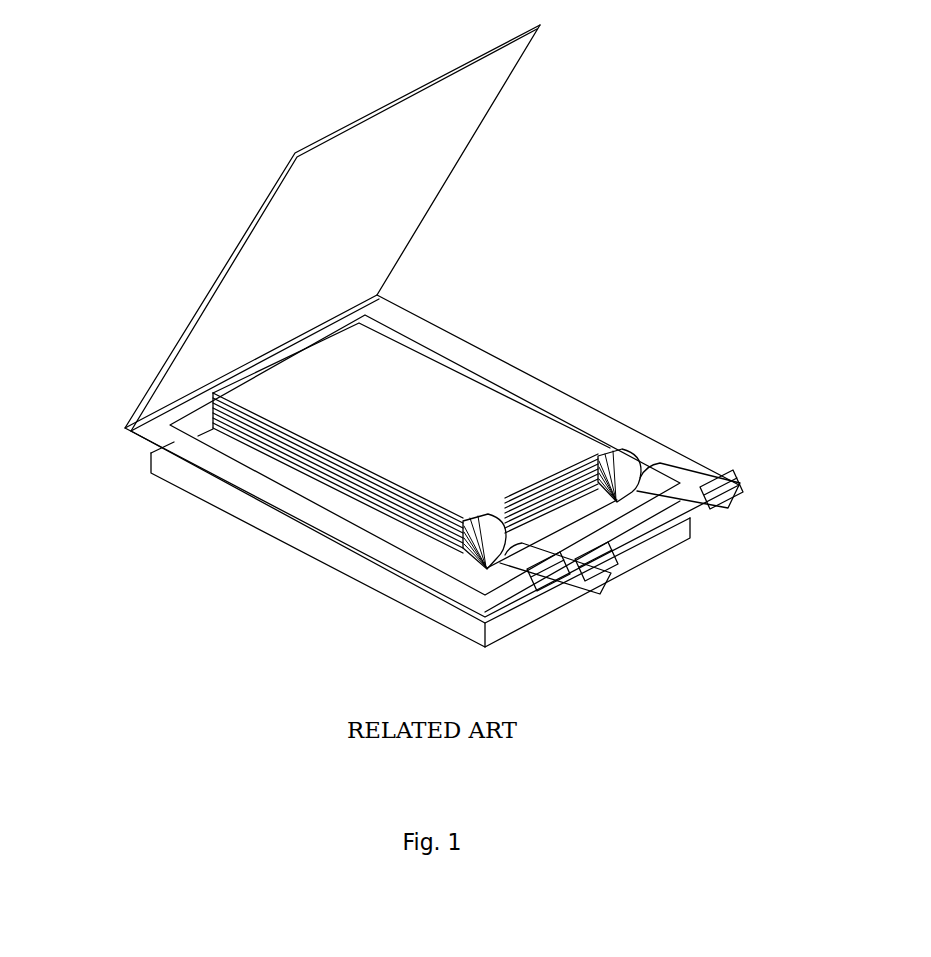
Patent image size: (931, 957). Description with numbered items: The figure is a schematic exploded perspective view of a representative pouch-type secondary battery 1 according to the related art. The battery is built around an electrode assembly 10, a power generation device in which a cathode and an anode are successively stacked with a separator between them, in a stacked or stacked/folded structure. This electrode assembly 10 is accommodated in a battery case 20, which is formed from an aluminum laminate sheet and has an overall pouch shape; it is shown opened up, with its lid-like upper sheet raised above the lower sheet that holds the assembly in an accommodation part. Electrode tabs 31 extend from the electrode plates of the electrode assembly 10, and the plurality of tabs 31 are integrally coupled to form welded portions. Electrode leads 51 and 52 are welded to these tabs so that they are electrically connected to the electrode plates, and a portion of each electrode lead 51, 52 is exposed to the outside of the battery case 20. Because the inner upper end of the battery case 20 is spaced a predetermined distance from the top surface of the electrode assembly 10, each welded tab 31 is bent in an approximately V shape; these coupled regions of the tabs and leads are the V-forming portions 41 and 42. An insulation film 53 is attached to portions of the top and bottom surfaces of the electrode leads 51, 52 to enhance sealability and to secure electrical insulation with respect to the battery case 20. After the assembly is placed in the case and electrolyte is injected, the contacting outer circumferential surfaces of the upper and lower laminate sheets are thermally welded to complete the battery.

The pouch-type secondary battery 1 is at (313, 92).
The electrode assembly 10 is at (485, 394).
The battery case 20 is at (150, 453).
The electrode tab 31 is at (613, 452).
The V-forming portion 41 is at (475, 568).
The V-forming portion 42 is at (648, 466).
The electrode lead 51 is at (612, 573).
The electrode lead 52 is at (735, 502).
The insulation film 53 is at (548, 592).